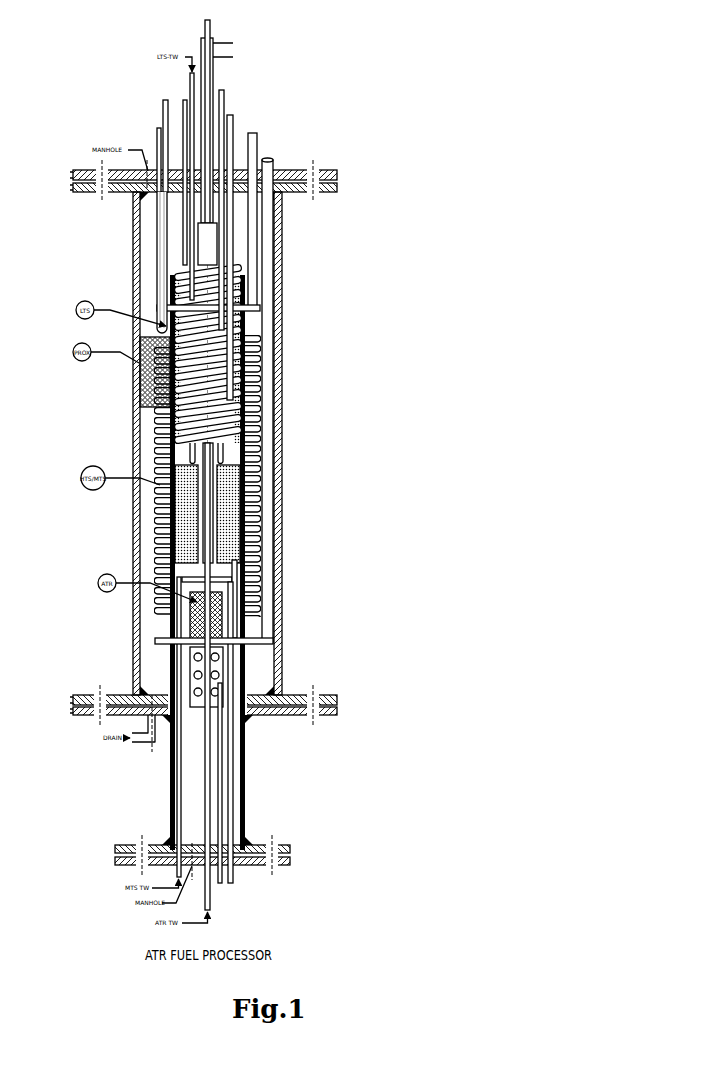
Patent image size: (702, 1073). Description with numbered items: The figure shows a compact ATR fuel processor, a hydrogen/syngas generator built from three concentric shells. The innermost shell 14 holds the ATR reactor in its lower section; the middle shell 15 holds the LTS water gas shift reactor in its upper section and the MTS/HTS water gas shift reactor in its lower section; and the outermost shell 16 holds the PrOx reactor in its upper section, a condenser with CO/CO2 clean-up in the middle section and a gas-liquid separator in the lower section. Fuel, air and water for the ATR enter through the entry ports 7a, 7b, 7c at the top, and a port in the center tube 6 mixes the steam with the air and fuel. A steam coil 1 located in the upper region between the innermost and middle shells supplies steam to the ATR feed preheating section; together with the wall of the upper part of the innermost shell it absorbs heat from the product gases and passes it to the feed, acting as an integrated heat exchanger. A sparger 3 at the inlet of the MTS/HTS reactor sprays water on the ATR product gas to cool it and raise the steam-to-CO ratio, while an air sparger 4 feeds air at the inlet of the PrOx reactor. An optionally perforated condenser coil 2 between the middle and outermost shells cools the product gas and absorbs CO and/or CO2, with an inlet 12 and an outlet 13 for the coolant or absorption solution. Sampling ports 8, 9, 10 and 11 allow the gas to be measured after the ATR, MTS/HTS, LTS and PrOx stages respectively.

The steam coil 1 is at (239, 265).
The condenser coil 2 is at (257, 480).
The sparger 3 is at (235, 600).
The air sparger 4 is at (158, 118).
The port in center tube 6 is at (206, 258).
The entry port 7a is at (208, 19).
The entry port 7b is at (235, 52).
The entry port 7c is at (230, 114).
The sampling port 8 is at (220, 885).
The sampling port 9 is at (222, 89).
The sampling port 10 is at (185, 99).
The sampling port 11 is at (268, 157).
The inlet 12 is at (163, 98).
The outlet 13 is at (252, 132).
The innermost shell 14 is at (223, 570).
The middle shell 15 is at (246, 292).
The outermost shell 16 is at (284, 368).